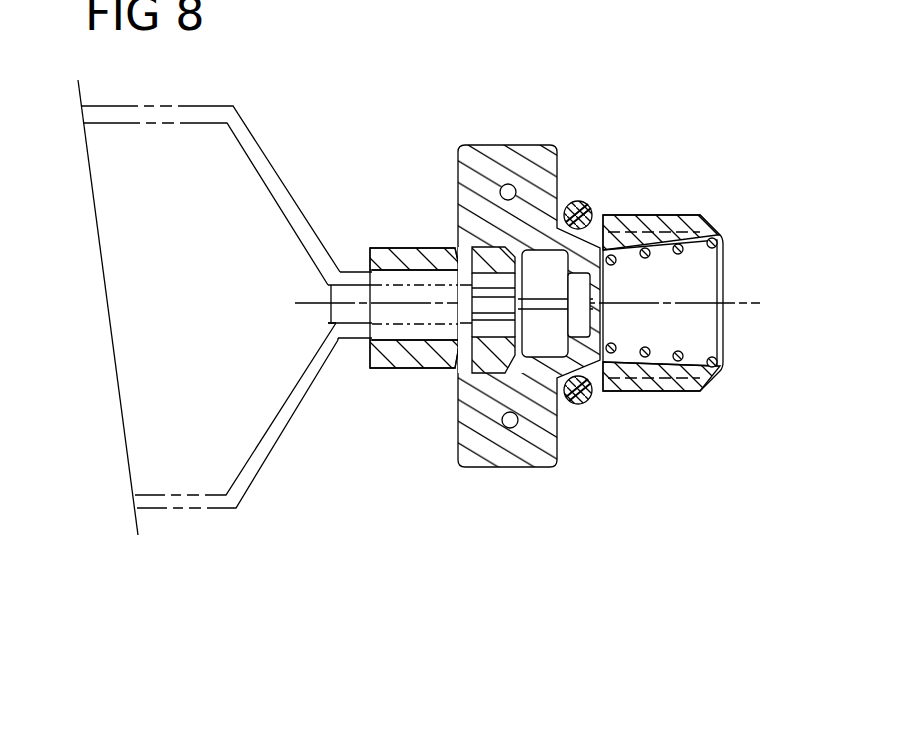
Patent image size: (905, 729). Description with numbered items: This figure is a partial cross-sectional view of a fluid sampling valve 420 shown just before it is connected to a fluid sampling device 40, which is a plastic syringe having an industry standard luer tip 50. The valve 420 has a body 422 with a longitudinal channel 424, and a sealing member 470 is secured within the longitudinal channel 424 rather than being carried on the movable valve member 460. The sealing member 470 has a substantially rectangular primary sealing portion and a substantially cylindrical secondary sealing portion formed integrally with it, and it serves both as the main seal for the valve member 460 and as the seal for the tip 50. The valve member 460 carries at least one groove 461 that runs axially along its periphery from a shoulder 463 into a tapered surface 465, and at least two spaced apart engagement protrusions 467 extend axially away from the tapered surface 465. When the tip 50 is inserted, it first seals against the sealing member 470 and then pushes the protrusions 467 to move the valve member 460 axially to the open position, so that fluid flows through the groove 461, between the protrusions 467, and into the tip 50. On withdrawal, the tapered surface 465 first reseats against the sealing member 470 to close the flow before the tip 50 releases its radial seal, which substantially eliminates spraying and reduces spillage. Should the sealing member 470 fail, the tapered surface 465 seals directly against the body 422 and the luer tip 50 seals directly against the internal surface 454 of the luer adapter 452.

The fluid sampling device 40 is at (258, 143).
The luer tip 50 is at (355, 283).
The valve 420 is at (643, 117).
The body 422 is at (447, 246).
The longitudinal channel 424 is at (703, 290).
The luer adapter 452 is at (447, 440).
The internal surface 454 is at (490, 320).
The valve member 460 is at (592, 320).
The groove 461 is at (540, 300).
The shoulder 463 is at (580, 255).
The tapered surface 465 is at (545, 365).
The engagement protrusions 467 is at (487, 297).
The sealing member 470 is at (480, 297).